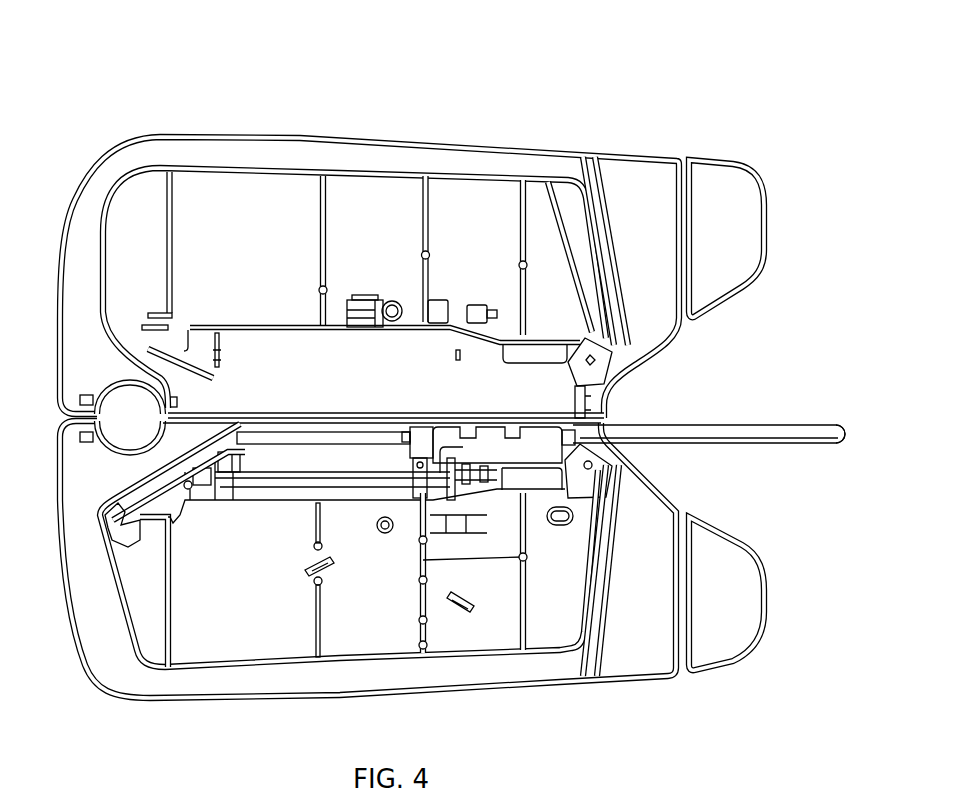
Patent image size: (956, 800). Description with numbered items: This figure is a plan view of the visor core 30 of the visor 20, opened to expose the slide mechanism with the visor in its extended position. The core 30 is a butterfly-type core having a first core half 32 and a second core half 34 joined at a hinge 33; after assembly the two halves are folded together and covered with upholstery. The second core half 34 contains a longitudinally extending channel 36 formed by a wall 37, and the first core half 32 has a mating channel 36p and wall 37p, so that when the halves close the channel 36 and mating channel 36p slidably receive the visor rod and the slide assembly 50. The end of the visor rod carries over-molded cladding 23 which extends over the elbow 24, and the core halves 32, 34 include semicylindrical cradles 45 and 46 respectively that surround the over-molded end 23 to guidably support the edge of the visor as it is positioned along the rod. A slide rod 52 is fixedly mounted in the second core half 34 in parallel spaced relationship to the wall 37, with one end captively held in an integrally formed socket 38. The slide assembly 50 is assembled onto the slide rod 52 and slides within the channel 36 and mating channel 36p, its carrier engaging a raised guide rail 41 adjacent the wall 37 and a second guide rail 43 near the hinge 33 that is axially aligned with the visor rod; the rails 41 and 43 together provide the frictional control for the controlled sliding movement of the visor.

The visor 20 is at (425, 361).
The over-molded cladding 23 is at (627, 424).
The elbow 24 is at (843, 425).
The visor core 30 is at (740, 188).
The first core half 32 is at (660, 325).
The hinge 33 is at (603, 415).
The second core half 34 is at (653, 507).
The channel 36 is at (357, 468).
The mating channel 36p is at (371, 386).
The wall 37 is at (345, 507).
The wall 37p is at (288, 330).
The socket 38 is at (200, 482).
The guide rail 41 is at (296, 497).
The second guide rail 43 is at (287, 438).
The semicylindrical cradle 45 is at (577, 399).
The semicylindrical cradle 46 is at (607, 450).
The slide assembly 50 is at (493, 424).
The slide rod 52 is at (263, 478).